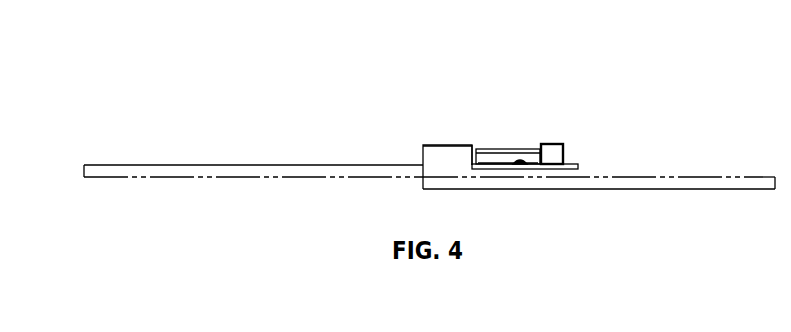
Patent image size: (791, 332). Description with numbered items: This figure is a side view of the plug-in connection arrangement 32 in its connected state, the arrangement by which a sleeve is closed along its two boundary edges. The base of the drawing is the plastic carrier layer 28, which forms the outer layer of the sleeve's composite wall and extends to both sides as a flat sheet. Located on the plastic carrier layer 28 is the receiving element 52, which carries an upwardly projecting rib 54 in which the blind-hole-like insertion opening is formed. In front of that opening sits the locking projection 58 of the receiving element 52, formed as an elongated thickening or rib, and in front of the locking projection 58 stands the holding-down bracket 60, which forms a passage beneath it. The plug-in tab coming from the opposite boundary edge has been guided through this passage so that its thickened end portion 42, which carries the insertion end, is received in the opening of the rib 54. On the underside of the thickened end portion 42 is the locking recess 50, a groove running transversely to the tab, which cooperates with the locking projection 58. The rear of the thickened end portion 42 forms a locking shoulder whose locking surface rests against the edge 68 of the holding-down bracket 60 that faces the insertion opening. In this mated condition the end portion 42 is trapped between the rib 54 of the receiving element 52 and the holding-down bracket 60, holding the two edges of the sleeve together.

The plastic carrier layer 28 is at (201, 178).
The plug-in connection arrangement 32 is at (408, 127).
The end portion 42 is at (498, 151).
The locking recess 50 is at (518, 163).
The receiving element 52 is at (593, 167).
The rib 54 is at (553, 147).
The locking projection 58 is at (520, 165).
The holding-down bracket 60 is at (447, 146).
The edge 68 is at (473, 147).